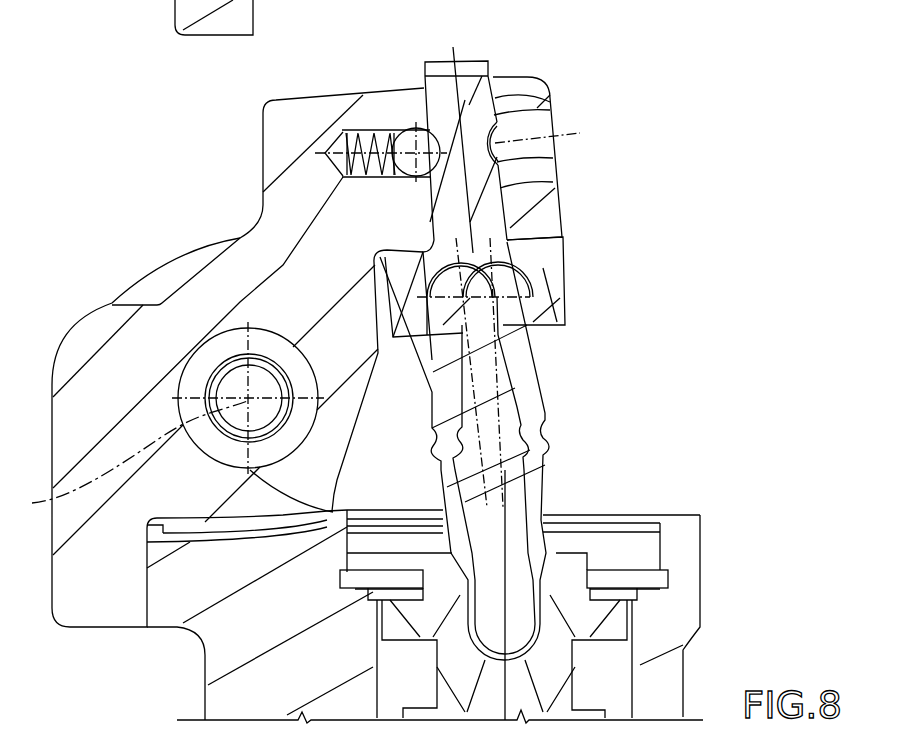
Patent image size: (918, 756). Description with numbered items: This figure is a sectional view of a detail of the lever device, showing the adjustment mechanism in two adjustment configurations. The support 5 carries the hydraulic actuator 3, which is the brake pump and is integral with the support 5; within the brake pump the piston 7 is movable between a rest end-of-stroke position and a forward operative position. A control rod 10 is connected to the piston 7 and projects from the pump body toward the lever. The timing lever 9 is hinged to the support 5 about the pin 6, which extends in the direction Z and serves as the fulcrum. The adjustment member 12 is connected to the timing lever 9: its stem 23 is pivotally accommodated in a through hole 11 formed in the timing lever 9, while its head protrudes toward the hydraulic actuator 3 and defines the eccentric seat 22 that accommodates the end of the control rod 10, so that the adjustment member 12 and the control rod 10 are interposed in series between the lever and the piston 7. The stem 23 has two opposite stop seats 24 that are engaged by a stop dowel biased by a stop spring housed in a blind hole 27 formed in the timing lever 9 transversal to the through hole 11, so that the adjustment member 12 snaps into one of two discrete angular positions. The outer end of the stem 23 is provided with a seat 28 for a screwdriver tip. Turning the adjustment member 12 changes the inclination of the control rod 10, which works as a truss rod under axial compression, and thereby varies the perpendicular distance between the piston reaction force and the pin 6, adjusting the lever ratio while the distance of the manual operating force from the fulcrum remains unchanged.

The hydraulic actuator 3 is at (687, 578).
The support 5 is at (222, 657).
The pin 6 is at (233, 383).
The piston 7 is at (603, 672).
The timing lever 9 is at (287, 163).
The control rod 10 is at (507, 463).
The through hole 11 is at (548, 97).
The adjustment member 12 is at (545, 275).
The seat 22 is at (500, 333).
The stem 23 is at (485, 203).
The stop seats 24 is at (407, 128).
The blind hole 27 is at (360, 130).
The seat 28 is at (478, 64).
The direction Z- Z is at (128, 462).